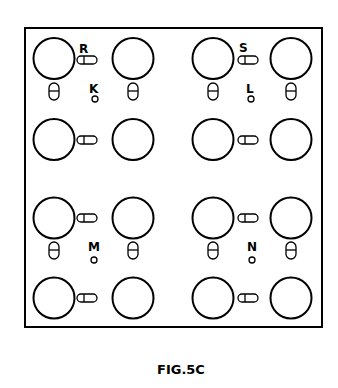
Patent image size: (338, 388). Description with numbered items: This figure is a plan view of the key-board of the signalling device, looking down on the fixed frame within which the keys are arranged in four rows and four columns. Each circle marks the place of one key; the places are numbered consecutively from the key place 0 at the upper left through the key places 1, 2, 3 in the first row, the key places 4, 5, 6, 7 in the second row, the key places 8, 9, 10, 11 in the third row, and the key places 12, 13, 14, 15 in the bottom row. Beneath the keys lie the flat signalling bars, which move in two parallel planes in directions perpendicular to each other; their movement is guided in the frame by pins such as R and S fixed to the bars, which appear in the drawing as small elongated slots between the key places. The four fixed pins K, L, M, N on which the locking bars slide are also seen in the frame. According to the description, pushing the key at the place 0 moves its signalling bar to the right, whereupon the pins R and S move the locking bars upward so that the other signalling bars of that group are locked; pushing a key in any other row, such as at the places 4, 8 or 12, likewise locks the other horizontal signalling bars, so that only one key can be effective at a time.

The key at the place O 0 is at (54, 58).
The pin position 1 is at (133, 58).
The pin position 2 is at (213, 58).
The pin position 3 is at (291, 58).
The pin position 4 is at (54, 139).
The pin position 5 is at (133, 139).
The pin position 6 is at (213, 139).
The pin position 7 is at (291, 139).
The pin position 8 is at (54, 218).
The pin position 9 is at (133, 218).
The pin position 10 is at (213, 218).
The pin position 11 is at (291, 218).
The pin position 12 is at (54, 298).
The pin position 13 is at (133, 298).
The pin position 14 is at (213, 298).
The pin position 15 is at (291, 298).